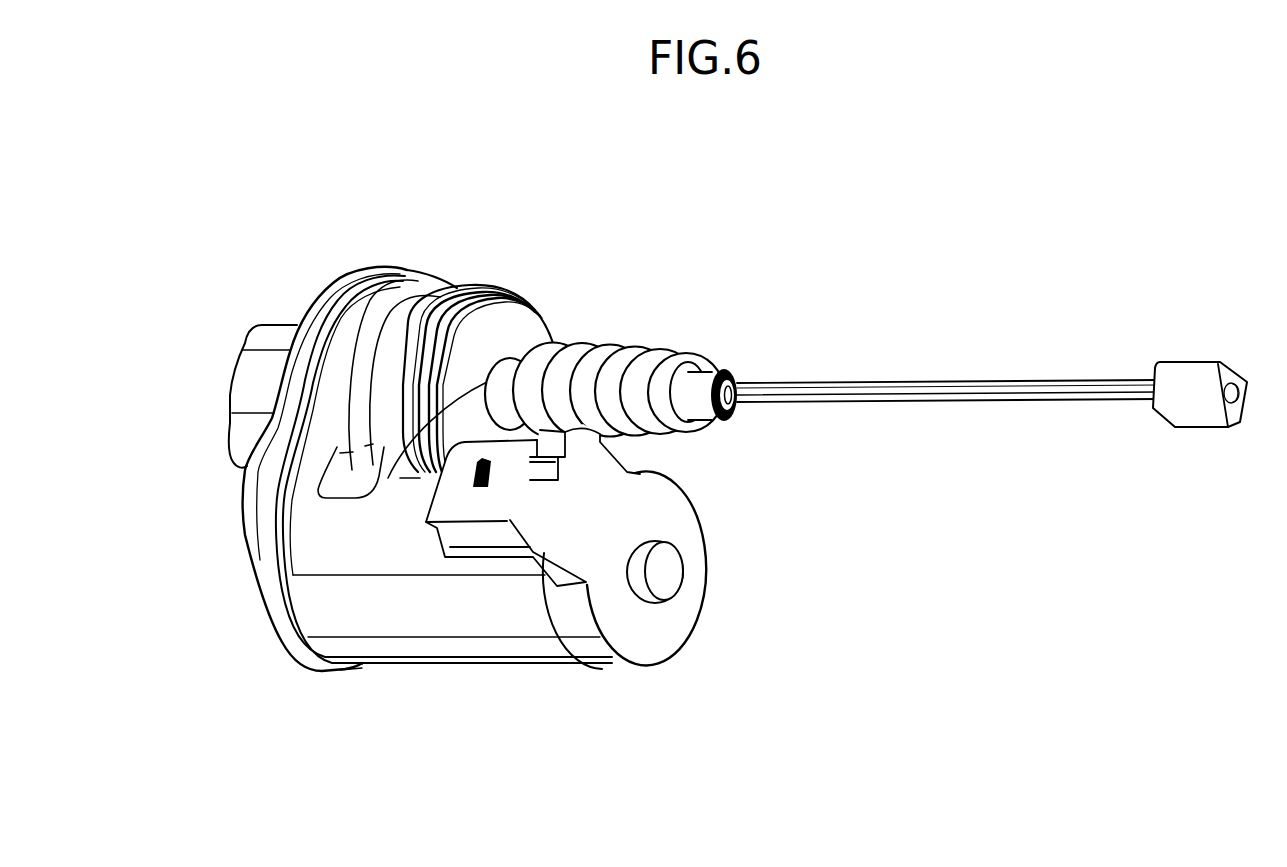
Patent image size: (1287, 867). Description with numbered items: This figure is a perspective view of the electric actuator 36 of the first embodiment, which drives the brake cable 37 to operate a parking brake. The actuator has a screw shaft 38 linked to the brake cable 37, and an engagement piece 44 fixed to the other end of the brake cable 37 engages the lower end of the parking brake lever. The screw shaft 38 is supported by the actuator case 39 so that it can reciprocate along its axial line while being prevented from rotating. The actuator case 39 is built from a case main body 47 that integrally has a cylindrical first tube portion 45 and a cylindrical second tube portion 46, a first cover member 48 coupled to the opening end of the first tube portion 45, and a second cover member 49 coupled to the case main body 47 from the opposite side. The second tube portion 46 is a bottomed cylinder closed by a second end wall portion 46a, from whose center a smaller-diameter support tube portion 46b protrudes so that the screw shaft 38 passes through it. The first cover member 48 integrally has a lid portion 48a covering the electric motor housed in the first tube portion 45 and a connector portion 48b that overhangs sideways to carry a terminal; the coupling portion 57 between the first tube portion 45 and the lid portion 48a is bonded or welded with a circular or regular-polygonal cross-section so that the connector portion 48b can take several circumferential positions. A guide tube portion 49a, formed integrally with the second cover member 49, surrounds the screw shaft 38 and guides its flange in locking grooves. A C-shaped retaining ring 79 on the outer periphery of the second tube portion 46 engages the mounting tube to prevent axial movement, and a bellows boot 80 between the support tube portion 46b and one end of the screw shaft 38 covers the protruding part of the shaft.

The electric actuator 36 is at (292, 690).
The brake cable 37 is at (898, 388).
The screw shaft 38 is at (731, 364).
The actuator case 39 is at (322, 272).
The engagement piece 44 is at (1194, 380).
The first tube portion 45 is at (433, 650).
The second tube portion 46 is at (397, 327).
The second end wall portion 46a is at (531, 318).
The support tube portion 46b is at (383, 465).
The case main body 47 is at (468, 685).
The first cover member 48 is at (727, 574).
The lid portion 48a is at (685, 612).
The connector portion 48b is at (457, 507).
The second cover member 49 is at (271, 630).
The guide tube portion 49a is at (238, 385).
The coupling portion 57 is at (614, 690).
The retaining ring 79 is at (466, 285).
The bellows boot 80 is at (653, 360).